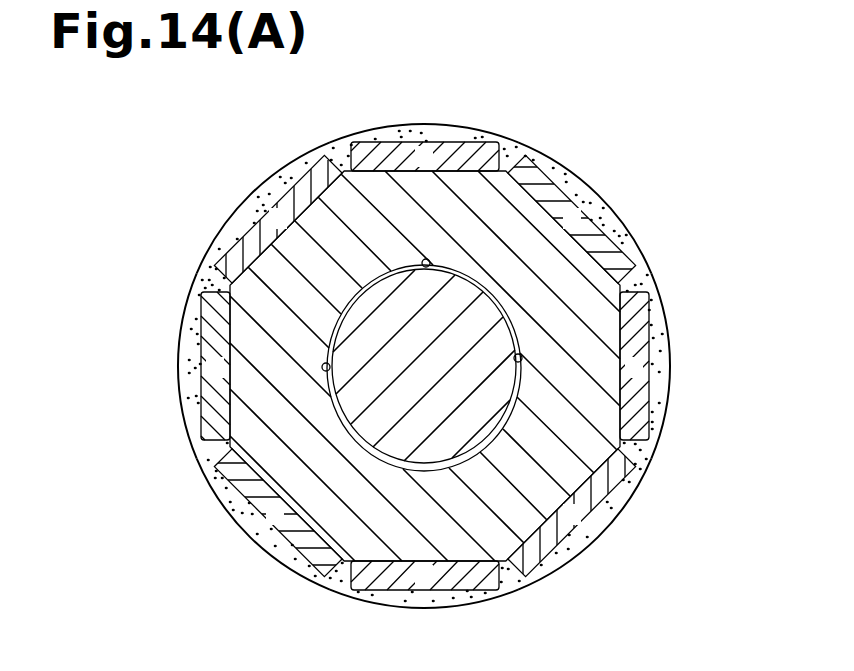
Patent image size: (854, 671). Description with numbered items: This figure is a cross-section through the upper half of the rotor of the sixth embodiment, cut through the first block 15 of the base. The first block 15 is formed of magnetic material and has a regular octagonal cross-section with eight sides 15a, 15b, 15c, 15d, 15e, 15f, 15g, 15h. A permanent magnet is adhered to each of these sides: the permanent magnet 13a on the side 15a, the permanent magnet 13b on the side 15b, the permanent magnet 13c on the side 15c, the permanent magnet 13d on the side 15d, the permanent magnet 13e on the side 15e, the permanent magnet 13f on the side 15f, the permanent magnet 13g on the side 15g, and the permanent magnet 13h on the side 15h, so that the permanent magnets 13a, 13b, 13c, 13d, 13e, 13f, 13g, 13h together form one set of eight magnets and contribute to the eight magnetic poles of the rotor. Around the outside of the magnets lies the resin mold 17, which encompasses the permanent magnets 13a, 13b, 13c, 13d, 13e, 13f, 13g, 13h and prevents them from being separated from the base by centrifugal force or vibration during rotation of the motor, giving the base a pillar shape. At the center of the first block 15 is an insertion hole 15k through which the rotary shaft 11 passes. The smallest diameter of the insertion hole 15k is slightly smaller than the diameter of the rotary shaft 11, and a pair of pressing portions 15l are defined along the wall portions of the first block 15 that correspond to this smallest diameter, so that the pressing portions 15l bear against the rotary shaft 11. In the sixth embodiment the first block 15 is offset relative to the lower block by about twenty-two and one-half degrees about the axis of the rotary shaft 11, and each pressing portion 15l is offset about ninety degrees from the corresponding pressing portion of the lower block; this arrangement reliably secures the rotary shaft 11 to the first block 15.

The rotary shaft 11 is at (449, 393).
The permanent magnet 13a is at (450, 136).
The permanent magnet 13b is at (616, 238).
The permanent magnet 13c is at (650, 398).
The permanent magnet 13d is at (553, 557).
The permanent magnet 13e is at (398, 607).
The permanent magnet 13f is at (252, 508).
The permanent magnet 13g is at (199, 321).
The permanent magnet 13h is at (292, 168).
The first block 15 is at (495, 185).
The side 15a is at (405, 170).
The side 15b is at (557, 194).
The side 15c is at (622, 330).
The side 15d is at (590, 493).
The side 15e is at (473, 568).
The side 15f is at (322, 565).
The side 15g is at (210, 413).
The side 15h is at (243, 238).
The insertion hole 15k is at (426, 258).
The pressing portion 15l is at (327, 362).
The resin mold 17 is at (358, 596).